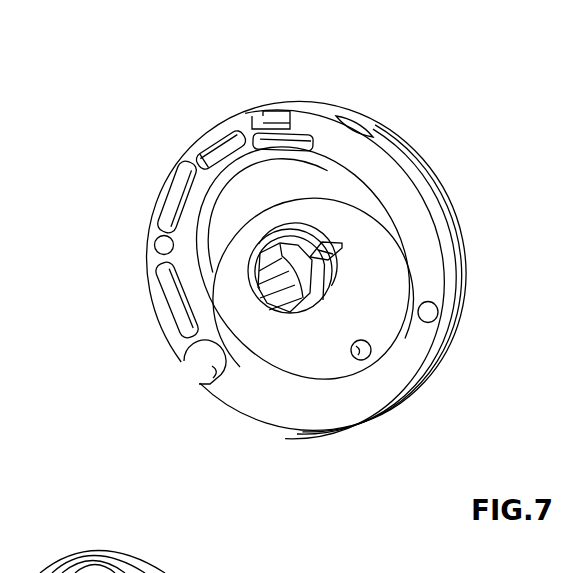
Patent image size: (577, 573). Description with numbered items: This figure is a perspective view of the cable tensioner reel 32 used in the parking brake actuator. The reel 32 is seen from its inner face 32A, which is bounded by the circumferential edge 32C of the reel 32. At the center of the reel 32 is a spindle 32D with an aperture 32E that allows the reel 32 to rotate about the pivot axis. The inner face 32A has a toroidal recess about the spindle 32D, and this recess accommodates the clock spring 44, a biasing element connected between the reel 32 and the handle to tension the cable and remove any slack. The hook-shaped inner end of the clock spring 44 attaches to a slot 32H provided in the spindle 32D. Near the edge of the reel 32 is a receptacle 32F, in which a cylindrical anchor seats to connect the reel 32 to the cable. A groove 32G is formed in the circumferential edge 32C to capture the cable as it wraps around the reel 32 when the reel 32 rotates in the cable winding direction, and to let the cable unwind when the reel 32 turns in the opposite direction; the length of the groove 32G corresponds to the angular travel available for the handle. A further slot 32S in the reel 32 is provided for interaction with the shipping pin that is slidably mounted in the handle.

The cable tensioner reel 32 is at (300, 78).
The slot 32S is at (276, 118).
The circumferential edge 32C is at (365, 128).
The inner face 32A is at (375, 228).
The groove 32G is at (459, 266).
The slot 32H is at (322, 259).
The receptacle 32F is at (203, 377).
The spindle 32D is at (302, 305).
The aperture 32E is at (300, 281).
The clock spring 44 is at (201, 569).